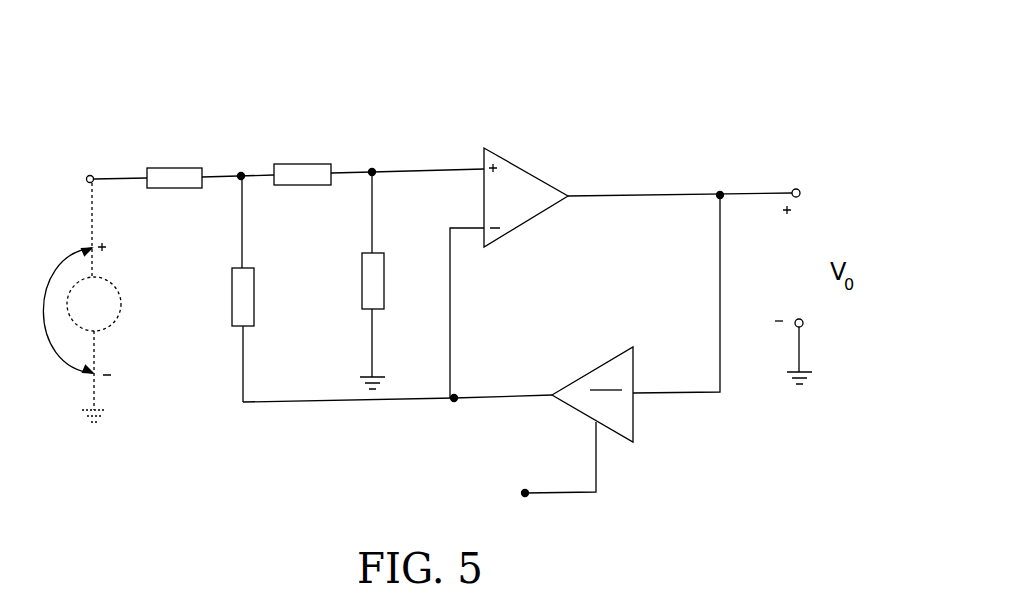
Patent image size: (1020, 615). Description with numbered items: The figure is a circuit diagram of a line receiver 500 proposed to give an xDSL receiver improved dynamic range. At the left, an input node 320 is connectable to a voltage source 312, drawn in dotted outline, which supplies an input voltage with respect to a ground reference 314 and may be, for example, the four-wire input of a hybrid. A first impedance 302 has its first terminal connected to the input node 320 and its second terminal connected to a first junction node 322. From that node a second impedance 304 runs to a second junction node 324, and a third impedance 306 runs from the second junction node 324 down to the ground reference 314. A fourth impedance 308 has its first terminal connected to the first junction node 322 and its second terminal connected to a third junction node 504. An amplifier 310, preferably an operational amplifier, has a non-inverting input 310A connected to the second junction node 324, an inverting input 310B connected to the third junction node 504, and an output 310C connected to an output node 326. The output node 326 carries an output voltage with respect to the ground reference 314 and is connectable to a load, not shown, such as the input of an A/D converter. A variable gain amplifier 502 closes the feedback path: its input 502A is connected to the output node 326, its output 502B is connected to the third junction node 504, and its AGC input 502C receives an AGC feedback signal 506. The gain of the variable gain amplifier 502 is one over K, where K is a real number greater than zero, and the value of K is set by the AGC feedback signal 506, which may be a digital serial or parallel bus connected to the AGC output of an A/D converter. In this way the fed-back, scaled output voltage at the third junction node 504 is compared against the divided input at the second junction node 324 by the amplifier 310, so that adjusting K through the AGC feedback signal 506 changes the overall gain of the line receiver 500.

The line receiver 500 is at (295, 50).
The input node 320 is at (92, 172).
The first impedance 302 is at (160, 190).
The first junction node 322 is at (242, 171).
The second impedance 304 is at (290, 187).
The second junction node 324 is at (373, 168).
The amplifier 310 is at (540, 143).
The non-inverting input 310A is at (482, 166).
The inverting input 310B is at (482, 225).
The output 310C is at (585, 170).
The output node 326 is at (799, 188).
The voltage source 312 is at (120, 304).
The ground reference 314 is at (95, 388).
The fourth impedance 308 is at (278, 255).
The third impedance 306 is at (385, 295).
The third junction node 504 is at (300, 402).
The variable gain amplifier 502 is at (588, 362).
The input 502A is at (637, 390).
The output 502B is at (565, 368).
The AGC input 502C is at (592, 428).
The AGC feedback signal 506 is at (524, 493).